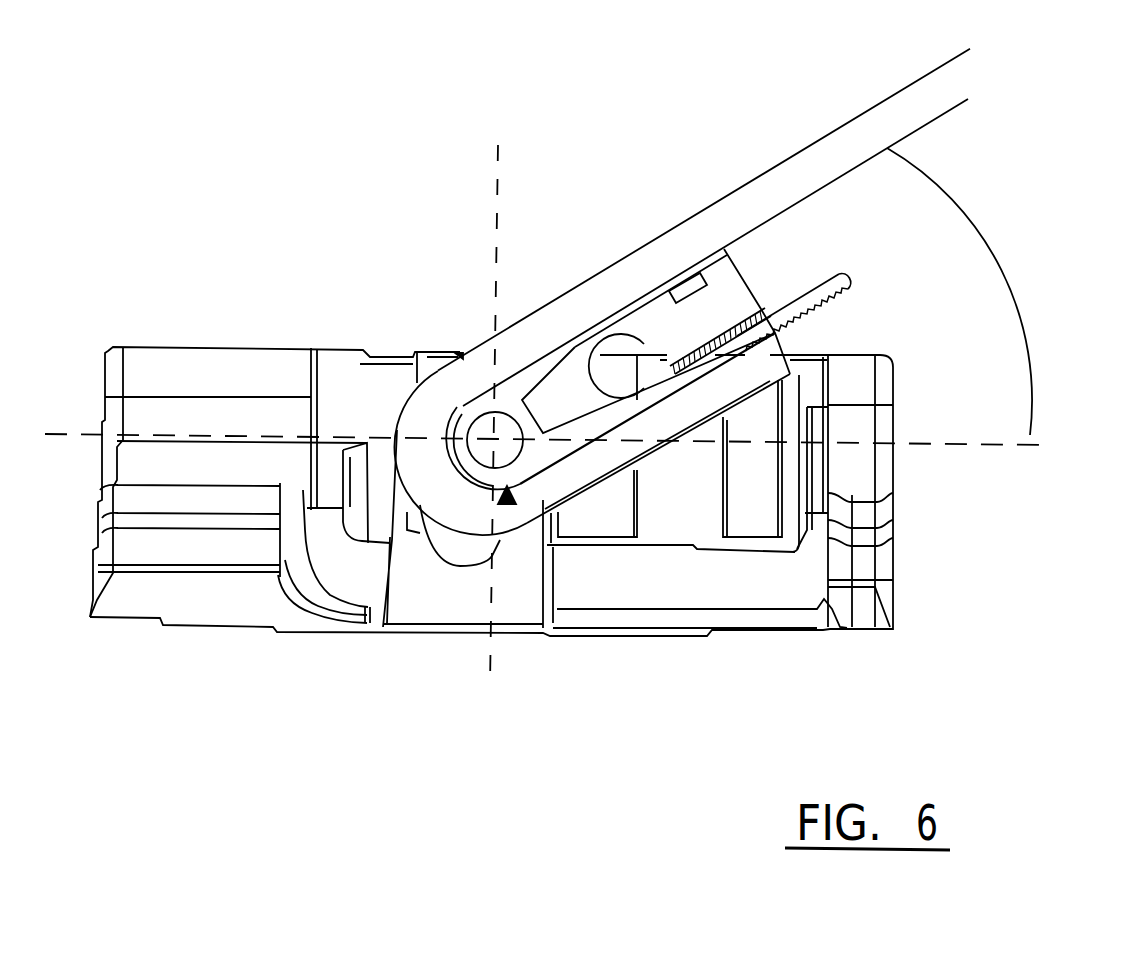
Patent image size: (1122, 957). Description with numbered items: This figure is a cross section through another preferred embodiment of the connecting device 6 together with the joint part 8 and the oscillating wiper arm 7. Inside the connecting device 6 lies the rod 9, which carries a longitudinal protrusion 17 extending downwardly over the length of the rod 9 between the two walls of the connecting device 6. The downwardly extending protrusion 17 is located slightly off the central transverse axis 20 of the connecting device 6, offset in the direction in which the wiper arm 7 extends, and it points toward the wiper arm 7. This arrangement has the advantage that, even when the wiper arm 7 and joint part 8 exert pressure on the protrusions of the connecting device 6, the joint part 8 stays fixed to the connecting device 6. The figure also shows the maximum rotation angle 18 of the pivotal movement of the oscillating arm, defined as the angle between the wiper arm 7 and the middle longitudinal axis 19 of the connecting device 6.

The connecting device 6 is at (338, 262).
The wiper arm 7 is at (747, 203).
The joint part 8 is at (540, 370).
The rod 9 is at (483, 430).
The longitudinal protrusion 17 is at (508, 504).
The maximum rotation angle 18 is at (1003, 272).
The middle longitudinal axis 19 is at (568, 449).
The central transverse axis 20 is at (504, 395).